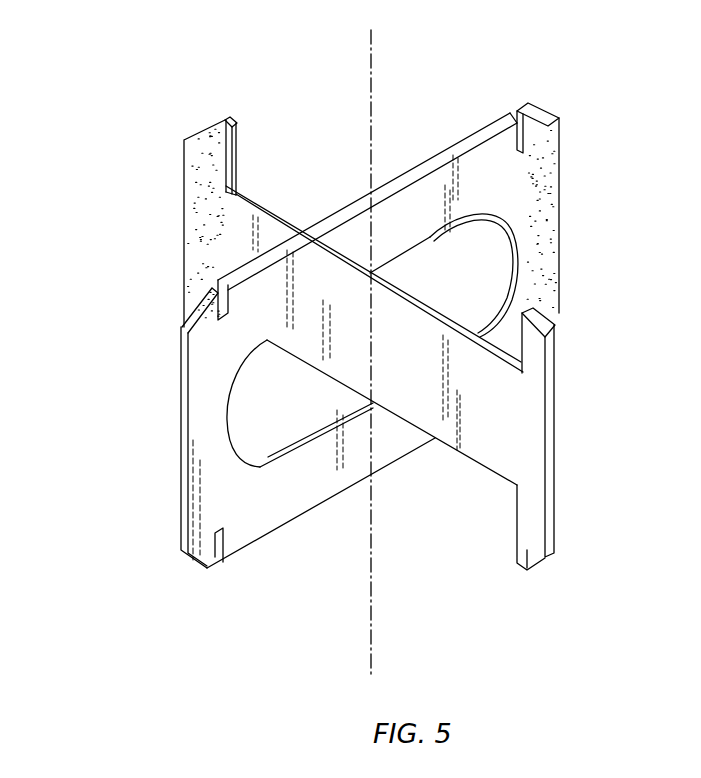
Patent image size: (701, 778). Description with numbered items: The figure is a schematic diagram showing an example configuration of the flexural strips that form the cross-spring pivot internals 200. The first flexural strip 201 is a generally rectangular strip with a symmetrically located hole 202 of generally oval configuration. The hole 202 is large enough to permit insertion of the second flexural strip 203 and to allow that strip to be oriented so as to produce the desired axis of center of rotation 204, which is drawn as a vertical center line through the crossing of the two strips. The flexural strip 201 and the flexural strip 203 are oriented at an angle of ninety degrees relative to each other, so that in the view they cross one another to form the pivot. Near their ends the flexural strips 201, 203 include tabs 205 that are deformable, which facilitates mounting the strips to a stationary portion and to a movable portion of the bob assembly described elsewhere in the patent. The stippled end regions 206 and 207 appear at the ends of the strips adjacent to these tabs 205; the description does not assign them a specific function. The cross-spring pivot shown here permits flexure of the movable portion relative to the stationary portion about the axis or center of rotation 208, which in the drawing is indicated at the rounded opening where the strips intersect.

The cross-spring pivot internals 200 is at (143, 98).
The first flexural strip 201 is at (480, 152).
The hole 202 is at (430, 237).
The flexural strip 203 is at (507, 406).
The axis of center of rotation 204 is at (373, 624).
The tabs 205 is at (557, 127).
The end face of first panel 206 is at (183, 214).
The end face of second panel 207 is at (547, 187).
The axis or center of rotation 208 is at (370, 402).